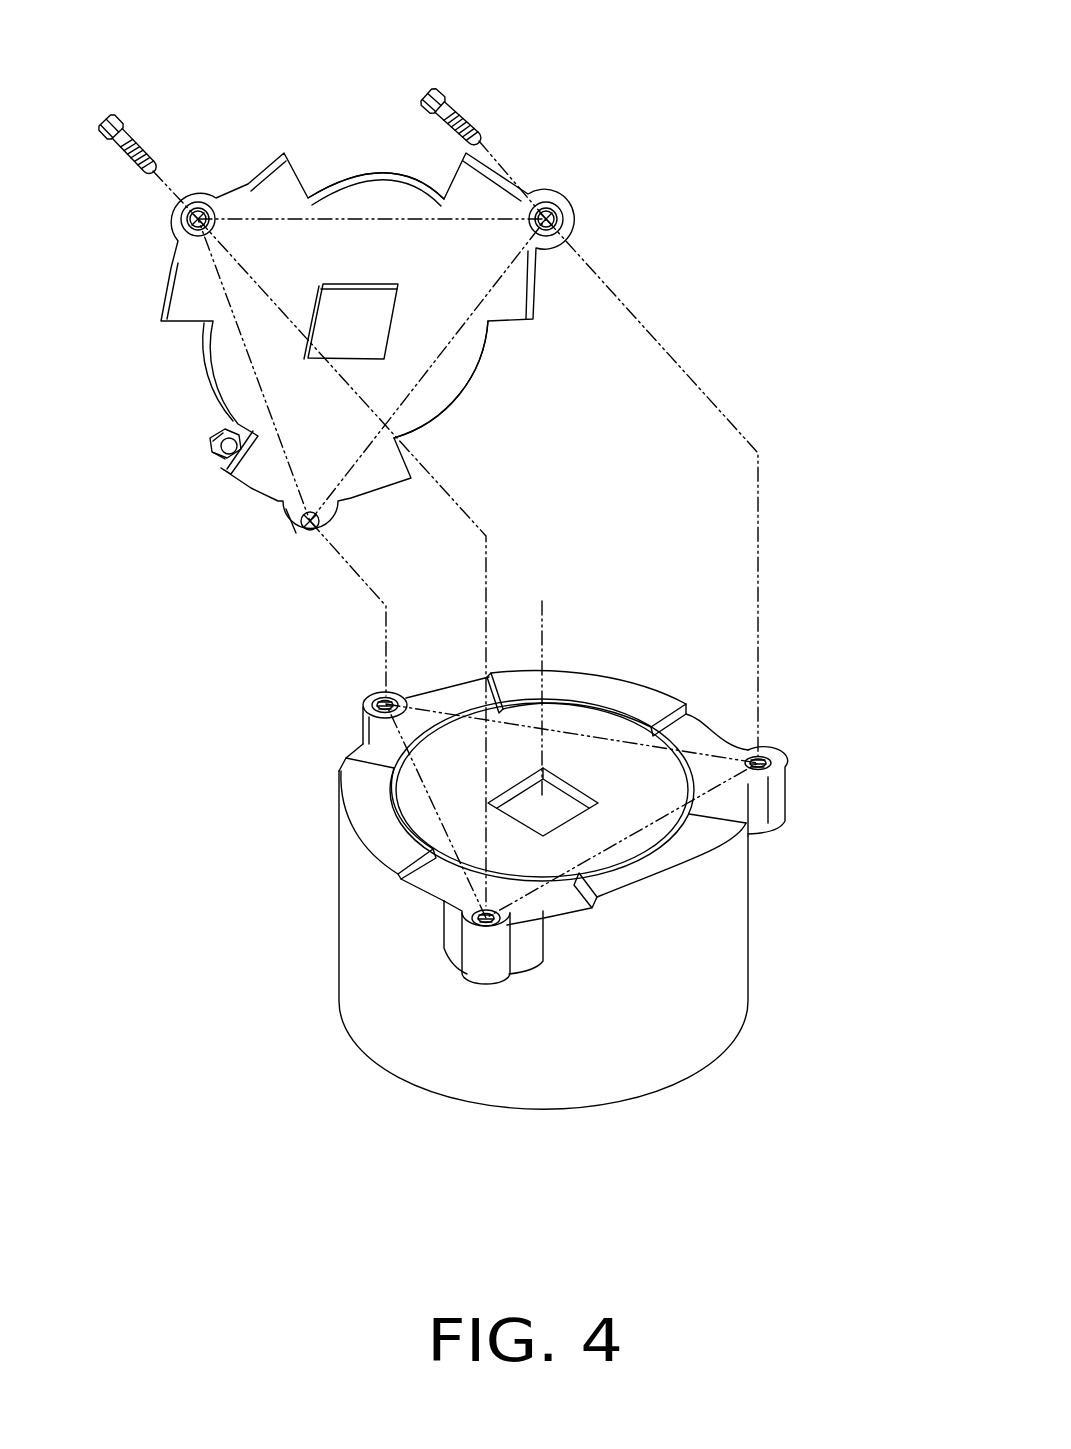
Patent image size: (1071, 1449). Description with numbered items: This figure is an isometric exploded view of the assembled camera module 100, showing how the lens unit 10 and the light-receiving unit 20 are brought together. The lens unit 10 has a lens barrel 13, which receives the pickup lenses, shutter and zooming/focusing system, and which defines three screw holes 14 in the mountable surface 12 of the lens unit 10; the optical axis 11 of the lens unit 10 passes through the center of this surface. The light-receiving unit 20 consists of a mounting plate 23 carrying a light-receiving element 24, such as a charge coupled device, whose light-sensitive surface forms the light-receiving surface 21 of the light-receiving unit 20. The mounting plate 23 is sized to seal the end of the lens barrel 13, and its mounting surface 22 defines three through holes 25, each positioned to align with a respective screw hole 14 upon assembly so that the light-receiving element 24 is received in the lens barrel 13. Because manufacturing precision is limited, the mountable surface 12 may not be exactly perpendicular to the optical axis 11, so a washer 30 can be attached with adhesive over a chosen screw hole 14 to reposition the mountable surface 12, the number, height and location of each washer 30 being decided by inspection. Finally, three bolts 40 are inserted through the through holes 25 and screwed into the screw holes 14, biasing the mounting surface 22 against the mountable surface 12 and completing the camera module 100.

The camera module 100 is at (560, 90).
The lens unit 10 is at (787, 868).
The optical axis 11 is at (547, 603).
The mountable surface 12 is at (582, 735).
The lens barrel 13 is at (680, 1010).
The screw holes 14 is at (770, 752).
The light-receiving unit 20 is at (150, 290).
The light-receiving surface 21 is at (380, 343).
The mounting surface 22 is at (488, 320).
The mounting plate 23 is at (385, 174).
The light-receiving element 24 is at (355, 283).
The through holes 25 is at (562, 218).
The washer 30 is at (182, 226).
The bolts 40 is at (123, 130).